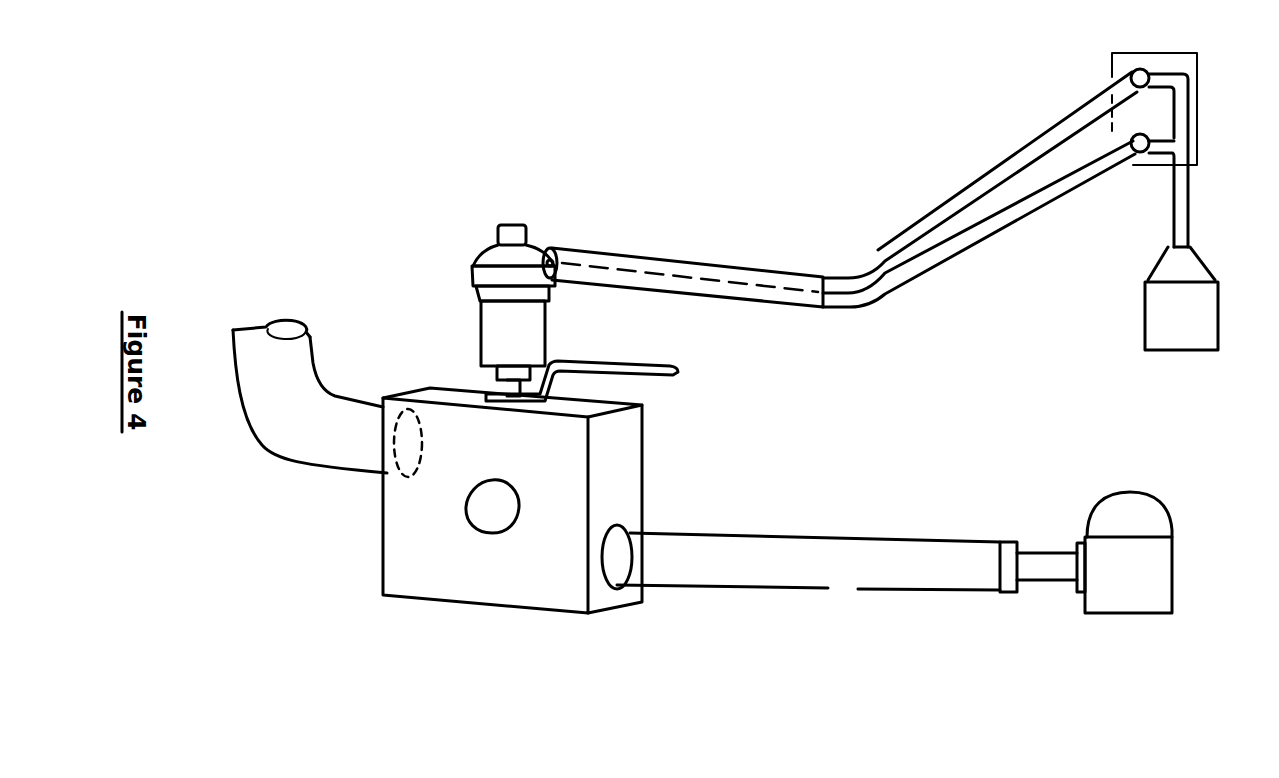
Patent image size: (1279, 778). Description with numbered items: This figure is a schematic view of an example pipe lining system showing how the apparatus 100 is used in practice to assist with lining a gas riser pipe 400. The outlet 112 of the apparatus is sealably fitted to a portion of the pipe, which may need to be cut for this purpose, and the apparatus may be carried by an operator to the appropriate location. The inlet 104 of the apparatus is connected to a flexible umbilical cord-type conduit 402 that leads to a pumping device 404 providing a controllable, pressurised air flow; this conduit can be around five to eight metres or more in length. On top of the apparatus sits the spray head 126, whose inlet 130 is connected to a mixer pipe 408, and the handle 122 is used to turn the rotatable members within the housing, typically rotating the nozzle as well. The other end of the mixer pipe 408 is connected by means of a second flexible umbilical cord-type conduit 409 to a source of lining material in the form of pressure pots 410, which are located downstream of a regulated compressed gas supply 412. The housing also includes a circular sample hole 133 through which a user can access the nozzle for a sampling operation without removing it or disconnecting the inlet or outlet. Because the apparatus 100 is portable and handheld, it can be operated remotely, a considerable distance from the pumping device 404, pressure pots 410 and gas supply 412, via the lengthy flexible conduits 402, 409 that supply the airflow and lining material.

The apparatus 100 is at (410, 558).
The inlet 104 is at (623, 558).
The outlet 112 is at (375, 407).
The handle 122 is at (625, 365).
The spray head 126 is at (483, 338).
The inlet 130 is at (541, 248).
The sample hole 133 is at (495, 518).
The gas riser pipe 400 is at (268, 353).
The flexible umbilical cord-type conduit 402 is at (845, 575).
The pumping device 404 is at (1135, 590).
The mixer pipe 408 is at (692, 268).
The flexible umbilical cord-type conduit 409 is at (852, 268).
The pressure pots 410 is at (1132, 75).
The regulated compressed gas supply 412 is at (1202, 268).